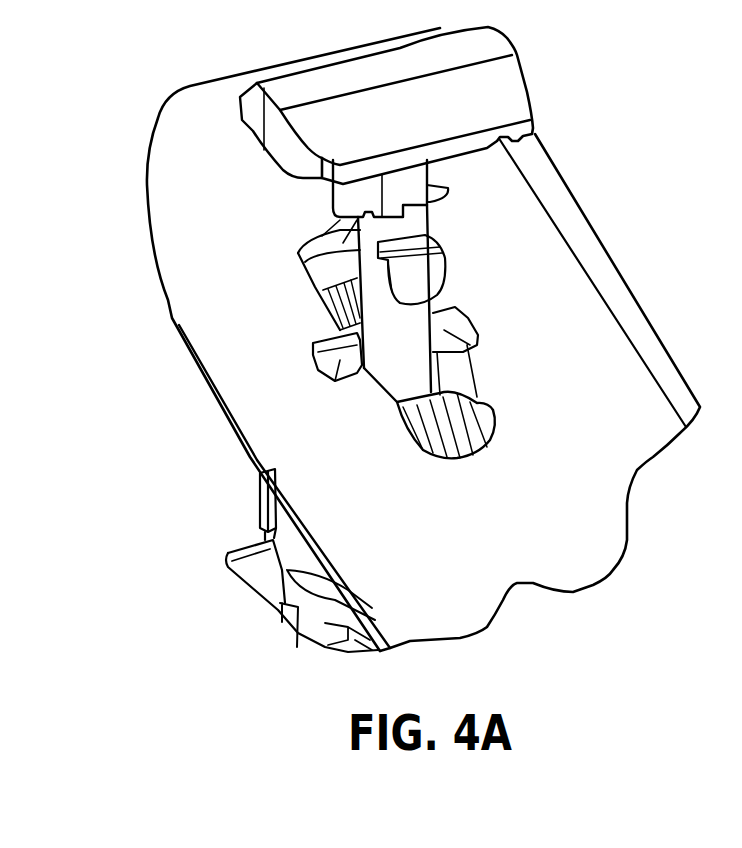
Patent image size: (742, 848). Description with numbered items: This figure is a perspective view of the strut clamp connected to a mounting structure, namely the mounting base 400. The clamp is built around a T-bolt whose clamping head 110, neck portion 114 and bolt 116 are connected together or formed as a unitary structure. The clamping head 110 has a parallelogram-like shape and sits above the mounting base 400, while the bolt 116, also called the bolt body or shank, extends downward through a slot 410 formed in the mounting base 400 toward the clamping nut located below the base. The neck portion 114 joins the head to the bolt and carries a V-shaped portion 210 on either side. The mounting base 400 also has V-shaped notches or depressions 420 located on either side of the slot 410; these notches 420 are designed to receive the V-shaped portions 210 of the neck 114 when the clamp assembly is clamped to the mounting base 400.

The mounting base 400 is at (213, 170).
The clamping head 110 is at (463, 91).
The neck portion 114 is at (437, 186).
The bolt 116 is at (417, 218).
The V-shaped notches 420 is at (478, 318).
The slot 410 is at (470, 402).
The V-shaped portion 210 is at (370, 188).